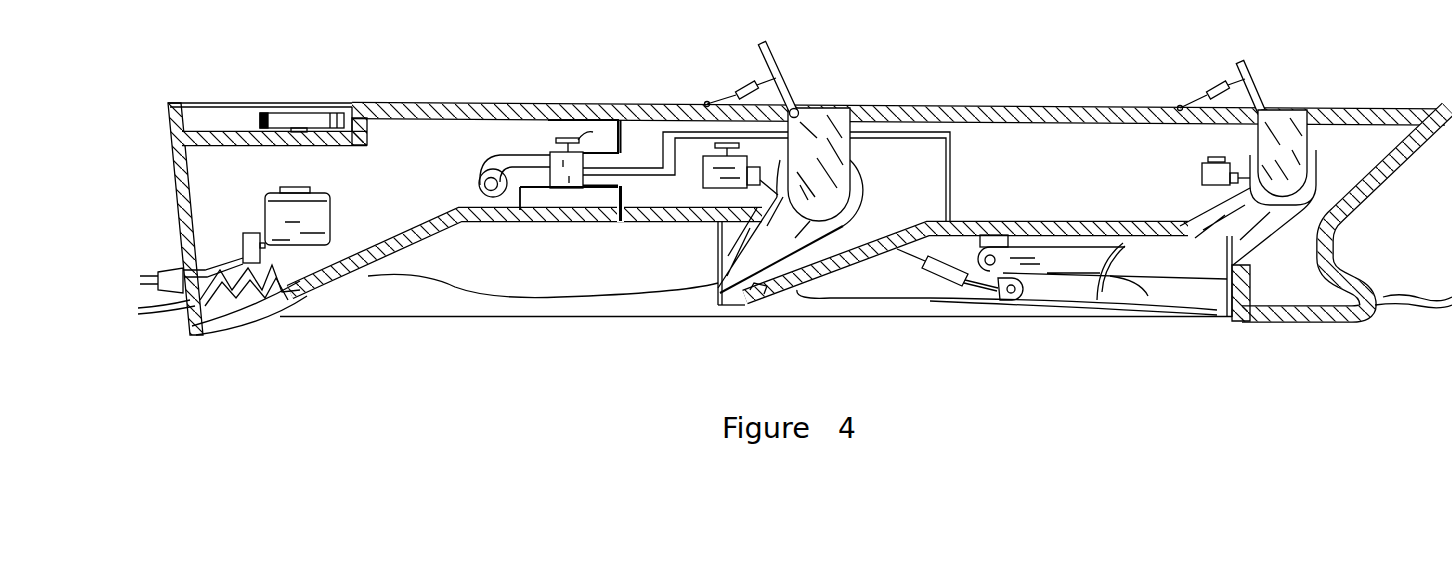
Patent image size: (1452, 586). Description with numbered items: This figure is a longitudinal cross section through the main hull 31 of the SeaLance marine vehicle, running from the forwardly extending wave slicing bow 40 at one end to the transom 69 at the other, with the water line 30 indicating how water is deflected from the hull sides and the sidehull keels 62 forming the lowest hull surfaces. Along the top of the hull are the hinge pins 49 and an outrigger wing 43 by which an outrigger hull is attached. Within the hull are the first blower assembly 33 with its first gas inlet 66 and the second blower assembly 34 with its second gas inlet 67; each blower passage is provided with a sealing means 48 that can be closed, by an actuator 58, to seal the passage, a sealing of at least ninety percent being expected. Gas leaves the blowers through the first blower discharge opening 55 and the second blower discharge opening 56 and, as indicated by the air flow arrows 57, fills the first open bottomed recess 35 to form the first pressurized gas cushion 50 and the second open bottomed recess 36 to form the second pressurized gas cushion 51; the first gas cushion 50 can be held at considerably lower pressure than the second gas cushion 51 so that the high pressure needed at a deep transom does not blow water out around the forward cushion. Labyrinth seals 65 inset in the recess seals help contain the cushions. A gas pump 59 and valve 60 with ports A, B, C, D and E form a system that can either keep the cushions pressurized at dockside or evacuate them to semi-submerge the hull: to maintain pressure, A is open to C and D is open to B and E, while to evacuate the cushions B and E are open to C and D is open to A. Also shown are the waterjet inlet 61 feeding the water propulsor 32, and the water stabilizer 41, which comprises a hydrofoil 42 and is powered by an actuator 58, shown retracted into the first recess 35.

The water line 30 is at (1393, 297).
The main hull 31 is at (1000, 110).
The water propulsor 32 is at (263, 208).
The first blower assembly 33 is at (1208, 160).
The second blower assembly 34 is at (709, 156).
The first open bottomed recess 35 is at (1134, 261).
The second open bottomed recess 36 is at (581, 281).
The wave slicing bow 40 is at (1367, 260).
The water stabilizer 41 is at (1050, 278).
The hydrofoil 42 is at (1148, 296).
The outrigger wings 43 is at (322, 110).
The sealing means 48 is at (822, 80).
The hinge pins 49 is at (303, 110).
The first pressurized gas cushion 50 is at (888, 290).
The second pressurized gas cushion 51 is at (475, 273).
The first blower discharge opening 55 is at (1226, 268).
The second blower discharge opening 56 is at (718, 273).
The air flow arrows 57 is at (1295, 110).
The actuator 58 is at (746, 88).
The gas pump 59 is at (482, 170).
The valve 60 is at (548, 152).
The waterjet inlet 61 is at (252, 324).
The sidehull keels 62 is at (397, 318).
The labyrinth seals 65 is at (203, 303).
The first gas inlet 66 is at (1290, 120).
The second gas inlet 67 is at (829, 128).
The transom 69 is at (172, 130).
The valve port A is at (622, 140).
The valve port B is at (623, 190).
The valve port C is at (521, 210).
The valve port D is at (548, 143).
The valve port E is at (661, 175).